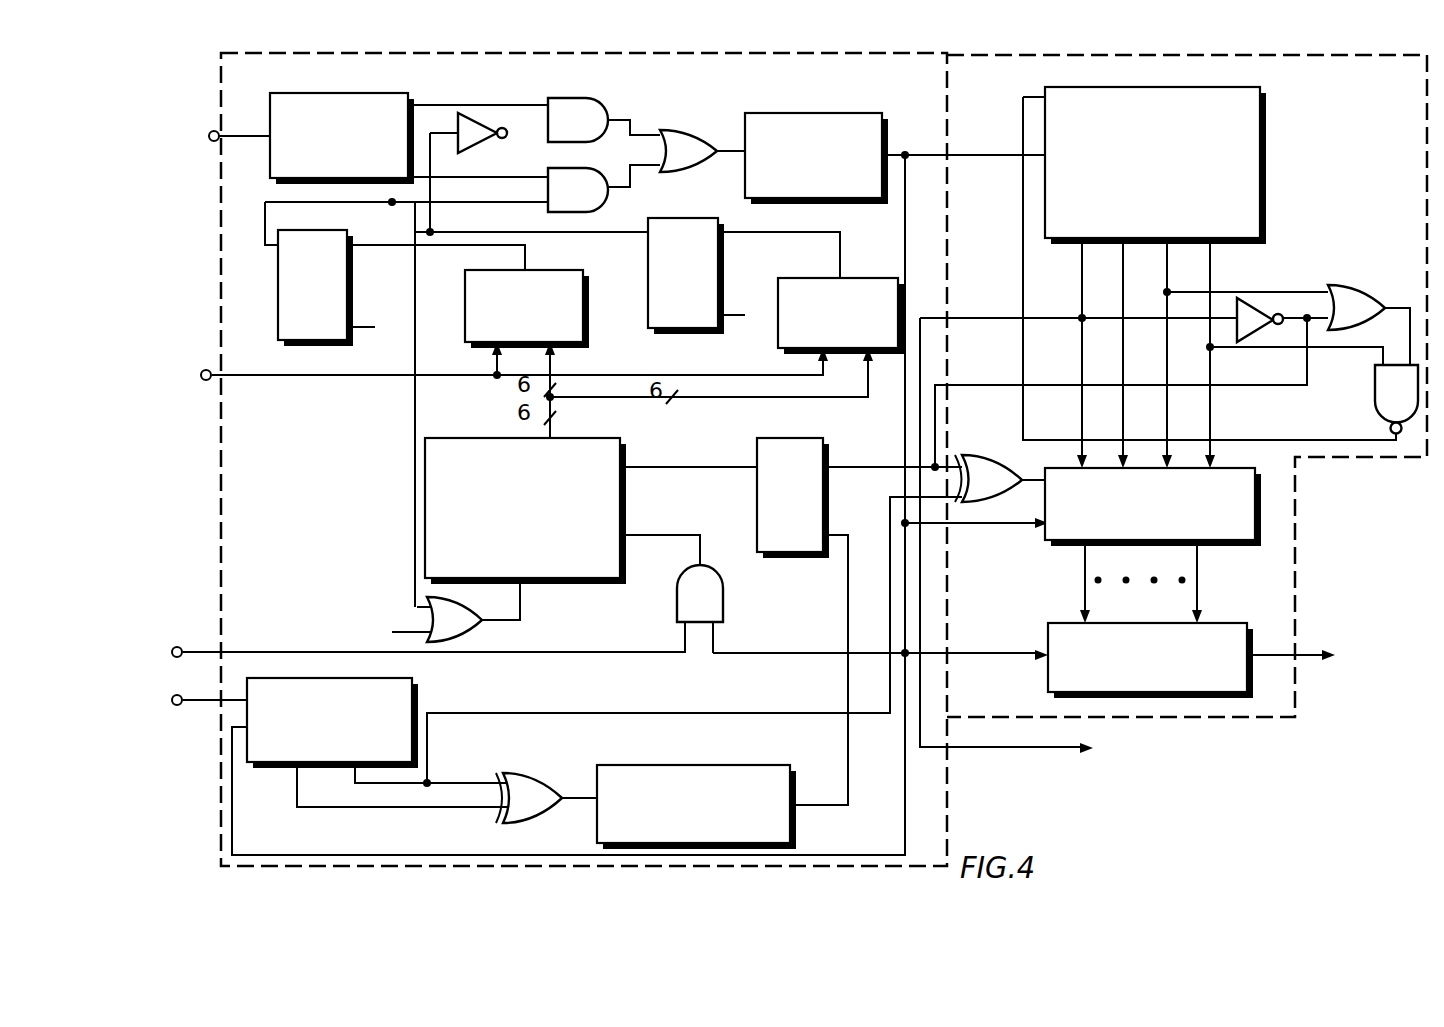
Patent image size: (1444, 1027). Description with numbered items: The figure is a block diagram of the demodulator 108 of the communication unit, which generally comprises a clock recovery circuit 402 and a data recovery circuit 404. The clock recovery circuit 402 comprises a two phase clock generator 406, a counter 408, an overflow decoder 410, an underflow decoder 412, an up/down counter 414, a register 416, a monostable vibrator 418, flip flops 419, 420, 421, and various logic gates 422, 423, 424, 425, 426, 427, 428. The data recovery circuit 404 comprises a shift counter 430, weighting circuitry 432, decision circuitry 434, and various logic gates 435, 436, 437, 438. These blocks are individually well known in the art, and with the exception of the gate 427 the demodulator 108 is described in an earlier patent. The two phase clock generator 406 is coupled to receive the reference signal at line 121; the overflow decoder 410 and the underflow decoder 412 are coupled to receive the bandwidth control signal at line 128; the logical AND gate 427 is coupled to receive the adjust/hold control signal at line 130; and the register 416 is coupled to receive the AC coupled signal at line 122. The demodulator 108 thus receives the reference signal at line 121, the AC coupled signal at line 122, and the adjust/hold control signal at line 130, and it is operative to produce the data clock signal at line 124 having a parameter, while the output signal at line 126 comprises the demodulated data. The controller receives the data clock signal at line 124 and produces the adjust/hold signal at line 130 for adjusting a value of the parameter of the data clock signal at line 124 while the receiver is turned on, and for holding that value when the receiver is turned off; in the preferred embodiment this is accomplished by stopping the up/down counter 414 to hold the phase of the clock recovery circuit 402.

The clock recovery circuit 402 is at (735, 53).
The data recovery circuit 404 is at (1187, 364).
The demodulator 108 is at (1083, 41).
The two phase clock generator 406 is at (271, 107).
The reference signal line 121 is at (222, 142).
The logic gate 422 is at (501, 127).
The logic gate 423 is at (600, 97).
The logic gate 425 is at (606, 213).
The logic gate 424 is at (697, 130).
The counter 408 is at (825, 112).
The flip flop 419 is at (276, 260).
The flip flop 420 is at (687, 330).
The overflow decoder 410 is at (485, 266).
The underflow decoder 412 is at (840, 277).
The up/down counter 414 is at (480, 436).
The flip flop 421 is at (793, 438).
The logic gate 426 is at (478, 632).
The logical AND gate 427 is at (725, 598).
The register 416 is at (410, 678).
The logic gate 428 is at (528, 773).
The monostable vibrator 418 is at (667, 765).
The shift counter 430 is at (1265, 120).
The logic gate 438 is at (1255, 300).
The logic gate 436 is at (1350, 278).
The logic gate 437 is at (1375, 392).
The logic gate 435 is at (985, 505).
The weighting circuitry 432 is at (1262, 547).
The decision circuitry 434 is at (1225, 697).
The output signal line 126 is at (1283, 660).
The data clock signal line 124 is at (997, 750).
The bandwidth control signal line 128 is at (228, 379).
The adjust/hold control signal line 130 is at (200, 652).
The AC coupled signal line 122 is at (207, 702).